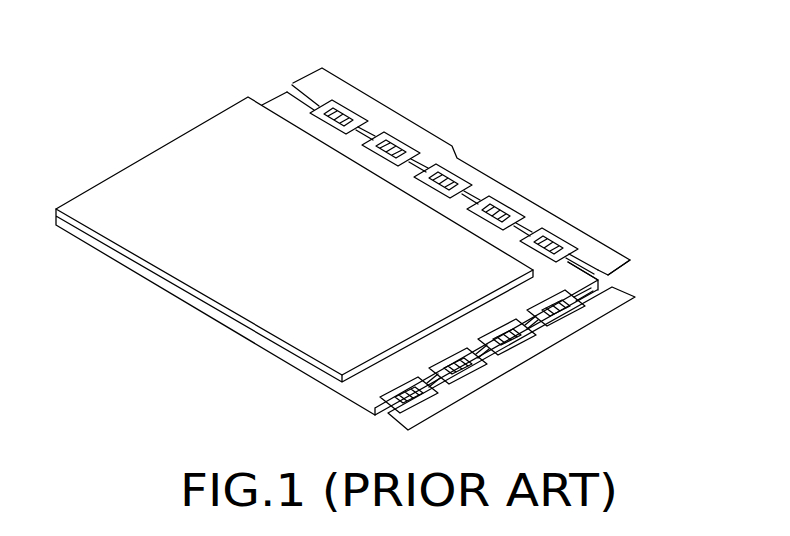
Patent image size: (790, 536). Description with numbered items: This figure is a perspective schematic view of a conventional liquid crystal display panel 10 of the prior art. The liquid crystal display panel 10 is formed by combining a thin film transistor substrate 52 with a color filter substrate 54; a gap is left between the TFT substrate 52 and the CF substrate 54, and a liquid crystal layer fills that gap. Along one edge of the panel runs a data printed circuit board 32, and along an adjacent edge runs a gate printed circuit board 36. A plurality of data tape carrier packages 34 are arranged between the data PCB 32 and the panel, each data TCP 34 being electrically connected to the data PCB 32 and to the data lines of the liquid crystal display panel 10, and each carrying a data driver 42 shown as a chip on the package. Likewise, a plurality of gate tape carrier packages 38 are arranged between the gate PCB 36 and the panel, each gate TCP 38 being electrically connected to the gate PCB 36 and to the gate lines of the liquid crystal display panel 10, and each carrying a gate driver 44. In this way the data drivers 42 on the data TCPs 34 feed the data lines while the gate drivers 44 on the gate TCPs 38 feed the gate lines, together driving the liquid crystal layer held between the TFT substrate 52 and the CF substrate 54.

The liquid crystal display panel 10 is at (179, 80).
The data printed circuit board 32 is at (588, 248).
The data tape carrier package 34 is at (582, 282).
The gate printed circuit board 36 is at (612, 302).
The gate tape carrier package 38 is at (580, 303).
The data driver 42 is at (498, 208).
The gate driver 44 is at (532, 345).
The thin film transistor substrate 52 is at (603, 253).
The color filter substrate 54 is at (503, 268).